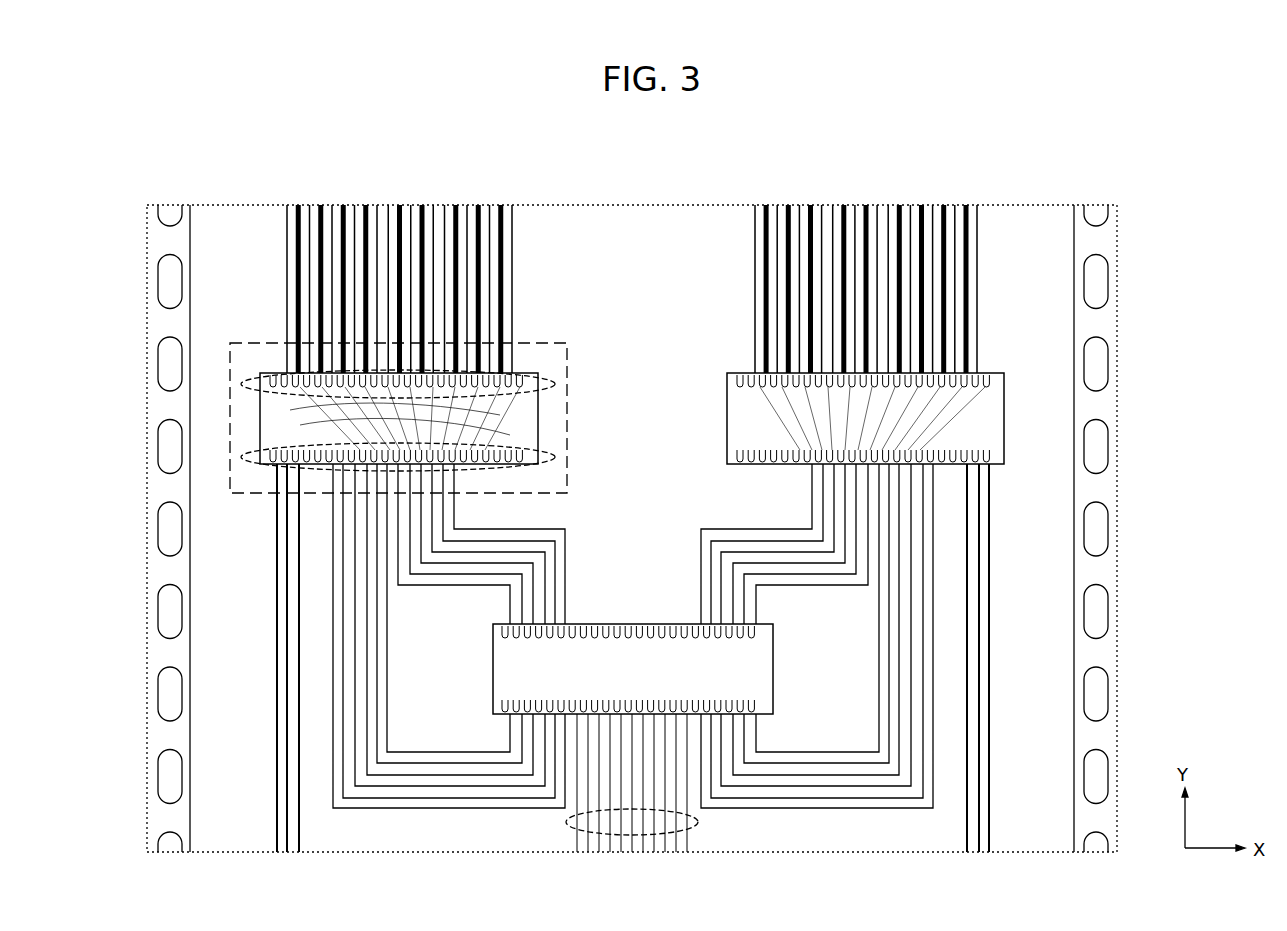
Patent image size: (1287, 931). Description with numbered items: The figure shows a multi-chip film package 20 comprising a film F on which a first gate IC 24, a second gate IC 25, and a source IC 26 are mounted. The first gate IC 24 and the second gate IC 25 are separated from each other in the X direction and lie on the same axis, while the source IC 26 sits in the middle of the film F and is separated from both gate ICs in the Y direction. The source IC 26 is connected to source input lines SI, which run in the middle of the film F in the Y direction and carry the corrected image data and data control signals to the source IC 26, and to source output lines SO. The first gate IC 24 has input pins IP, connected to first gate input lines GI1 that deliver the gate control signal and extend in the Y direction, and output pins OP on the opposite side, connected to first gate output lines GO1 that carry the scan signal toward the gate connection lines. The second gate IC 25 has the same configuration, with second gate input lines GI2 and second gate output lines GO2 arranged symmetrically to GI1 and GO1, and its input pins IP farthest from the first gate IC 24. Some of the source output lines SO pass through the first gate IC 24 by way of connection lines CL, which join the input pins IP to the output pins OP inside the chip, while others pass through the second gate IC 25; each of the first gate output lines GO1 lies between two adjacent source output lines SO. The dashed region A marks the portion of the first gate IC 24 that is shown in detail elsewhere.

The multi-chip film package 20 is at (1064, 163).
The film F is at (1046, 240).
The source output lines SO is at (290, 236).
The first gate output lines GO1 is at (296, 288).
The second gate output lines GO2 is at (968, 326).
The output pins OP is at (238, 378).
The connection lines CL is at (288, 413).
The first gate IC 24 is at (268, 428).
The input pins IP is at (240, 456).
The first gate input lines GI1 is at (278, 572).
The second gate input lines GI2 is at (990, 572).
The region A is at (574, 418).
The second gate IC 25 is at (992, 420).
The source IC 26 is at (758, 668).
The source input lines SI is at (700, 820).